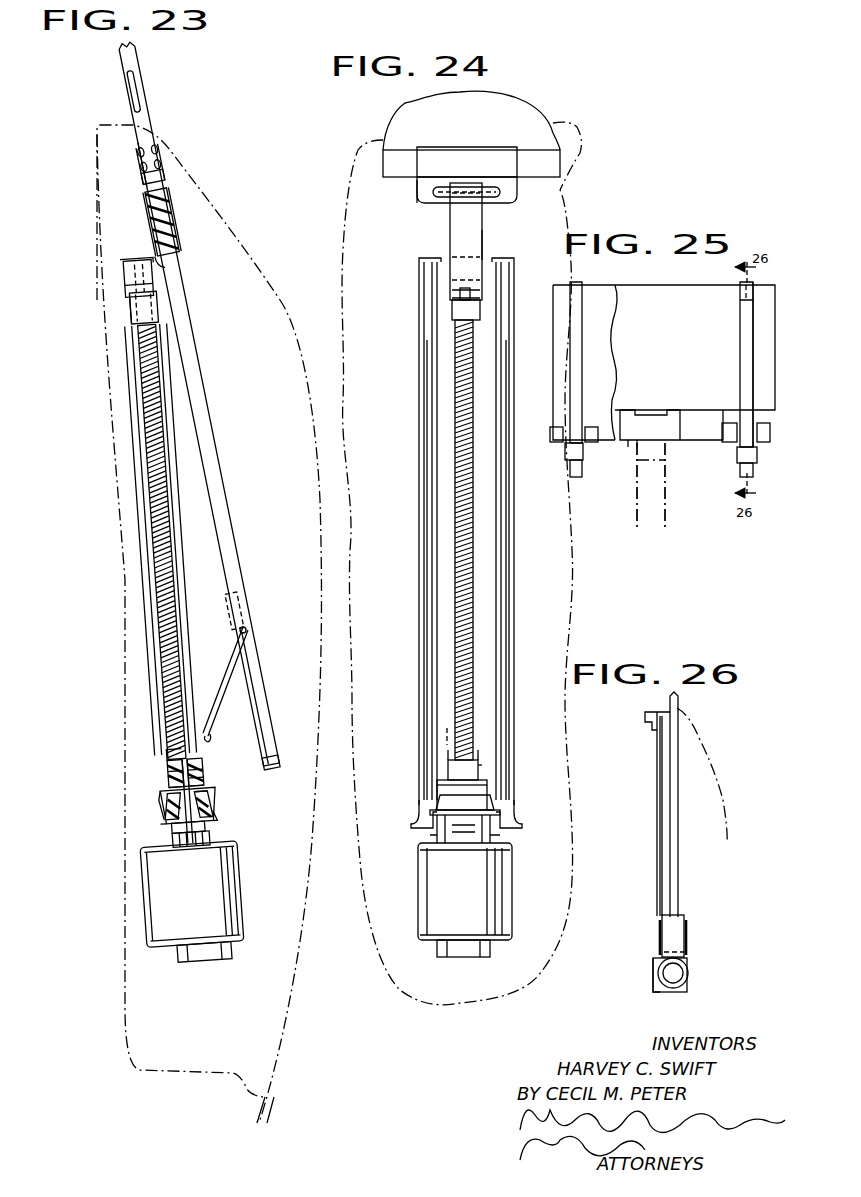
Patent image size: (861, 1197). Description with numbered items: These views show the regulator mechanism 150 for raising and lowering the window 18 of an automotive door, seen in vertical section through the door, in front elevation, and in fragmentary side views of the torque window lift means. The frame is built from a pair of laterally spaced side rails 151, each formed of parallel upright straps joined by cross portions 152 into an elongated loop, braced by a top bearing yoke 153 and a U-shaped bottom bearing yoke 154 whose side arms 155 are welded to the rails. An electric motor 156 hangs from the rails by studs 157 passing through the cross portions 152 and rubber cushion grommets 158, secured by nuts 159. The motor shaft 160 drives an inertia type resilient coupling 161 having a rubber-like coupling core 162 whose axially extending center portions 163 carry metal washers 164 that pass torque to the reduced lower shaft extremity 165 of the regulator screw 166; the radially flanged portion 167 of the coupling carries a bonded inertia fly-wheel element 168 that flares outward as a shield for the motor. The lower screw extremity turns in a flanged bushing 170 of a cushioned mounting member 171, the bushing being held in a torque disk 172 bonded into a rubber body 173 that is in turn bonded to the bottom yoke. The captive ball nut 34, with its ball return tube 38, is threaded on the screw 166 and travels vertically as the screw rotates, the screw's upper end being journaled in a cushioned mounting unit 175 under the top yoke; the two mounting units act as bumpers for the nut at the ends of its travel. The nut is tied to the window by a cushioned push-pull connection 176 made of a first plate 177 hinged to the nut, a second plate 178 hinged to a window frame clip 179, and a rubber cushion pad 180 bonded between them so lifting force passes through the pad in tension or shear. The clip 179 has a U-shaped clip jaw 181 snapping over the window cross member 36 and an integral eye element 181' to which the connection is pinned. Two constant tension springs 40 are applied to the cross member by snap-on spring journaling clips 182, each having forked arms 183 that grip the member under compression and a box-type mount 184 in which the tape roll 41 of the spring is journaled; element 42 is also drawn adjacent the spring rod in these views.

In FIG. 23, the window 18 is at (137, 108).
In FIG. 24, the window 18 is at (510, 100).
In FIG. 25, the window 18 is at (667, 308).
In FIG. 26, the window 18 is at (678, 793).
In FIG. 23, the ball nut 34 is at (130, 313).
In FIG. 24, the ball nut 34 is at (482, 318).
In FIG. 23, the window cross member 36 is at (160, 167).
In FIG. 24, the window cross member 36 is at (540, 162).
In FIG. 25, the window cross member 36 is at (702, 398).
In FIG. 24, the ball return tube 38 is at (447, 728).
In FIG. 25, the constant tension spring 40 is at (577, 335).
In FIG. 26, the constant tension spring 40 is at (654, 770).
In FIG. 26, the tape roll 41 is at (667, 990).
In FIG. 25, the guide strip 42 is at (748, 360).
In FIG. 26, the guide strip 42 is at (660, 832).
In FIG. 23, the regulator mechanism 150 is at (141, 478).
In FIG. 24, the regulator mechanism 150 is at (416, 518).
In FIG. 23, the side rail 151 is at (173, 503).
In FIG. 24, the side rail 151 is at (430, 597).
In FIG. 23, the cross portion 152 is at (273, 767).
In FIG. 24, the cross portion 152 is at (430, 273).
In FIG. 23, the top bearing yoke 153 is at (127, 257).
In FIG. 24, the top bearing yoke 153 is at (437, 258).
In FIG. 23, the bottom bearing yoke 154 is at (193, 767).
In FIG. 24, the bottom bearing yoke 154 is at (437, 780).
In FIG. 24, the side arm 155 is at (490, 797).
In FIG. 23, the electric motor 156 is at (223, 902).
In FIG. 24, the electric motor 156 is at (430, 910).
In FIG. 24, the stud 157 is at (418, 810).
In FIG. 24, the cushion grommet 158 is at (427, 837).
In FIG. 24, the nut 159 is at (507, 820).
In FIG. 23, the motor shaft 160 is at (187, 835).
In FIG. 24, the motor shaft 160 is at (463, 823).
In FIG. 23, the resilient coupling 161 is at (219, 806).
In FIG. 24, the resilient coupling 161 is at (433, 843).
In FIG. 23, the coupling core 162 is at (207, 797).
In FIG. 23, the center portion 163 is at (213, 817).
In FIG. 23, the metal washer 164 is at (167, 773).
In FIG. 23, the lower shaft extremity 165 is at (200, 778).
In FIG. 23, the regulator screw 166 is at (160, 550).
In FIG. 24, the regulator screw 166 is at (473, 458).
In FIG. 23, the radially flanged portion 167 is at (163, 793).
In FIG. 23, the inertia fly-wheel element 168 is at (160, 820).
In FIG. 23, the flanged bushing 170 is at (197, 773).
In FIG. 23, the cushioned mounting member 171 is at (166, 756).
In FIG. 24, the cushioned mounting member 171 is at (483, 766).
In FIG. 23, the torque disk 172 is at (197, 757).
In FIG. 24, the torque disk 172 is at (477, 760).
In FIG. 23, the rubber body 173 is at (130, 293).
In FIG. 24, the rubber body 173 is at (460, 770).
In FIG. 23, the cushioned mounting unit 175 is at (121, 273).
In FIG. 23, the cushioned push-pull connection 176 is at (189, 247).
In FIG. 24, the cushioned push-pull connection 176 is at (488, 243).
In FIG. 25, the cushioned push-pull connection 176 is at (635, 495).
In FIG. 23, the first plate 177 is at (170, 233).
In FIG. 23, the second plate 178 is at (177, 263).
In FIG. 24, the second plate 178 is at (463, 222).
In FIG. 25, the second plate 178 is at (660, 483).
In FIG. 23, the window frame clip 179 is at (131, 173).
In FIG. 24, the window frame clip 179 is at (408, 211).
In FIG. 23, the rubber cushion pad 180 is at (168, 217).
In FIG. 24, the rubber cushion pad 180 is at (470, 160).
In FIG. 25, the rubber cushion pad 180 is at (677, 412).
In FIG. 23, the clip jaw 181 is at (175, 148).
In FIG. 24, the clip jaw 181 is at (482, 209).
In FIG. 25, the clip jaw 181 is at (618, 456).
In FIG. 24, the eye element 181' is at (499, 285).
In FIG. 25, the spring journaling clip 182 is at (577, 455).
In FIG. 26, the spring journaling clip 182 is at (695, 927).
In FIG. 25, the forked arm 183 is at (591, 423).
In FIG. 26, the forked arm 183 is at (660, 938).
In FIG. 25, the box-type mount 184 is at (563, 470).
In FIG. 26, the box-type mount 184 is at (687, 983).